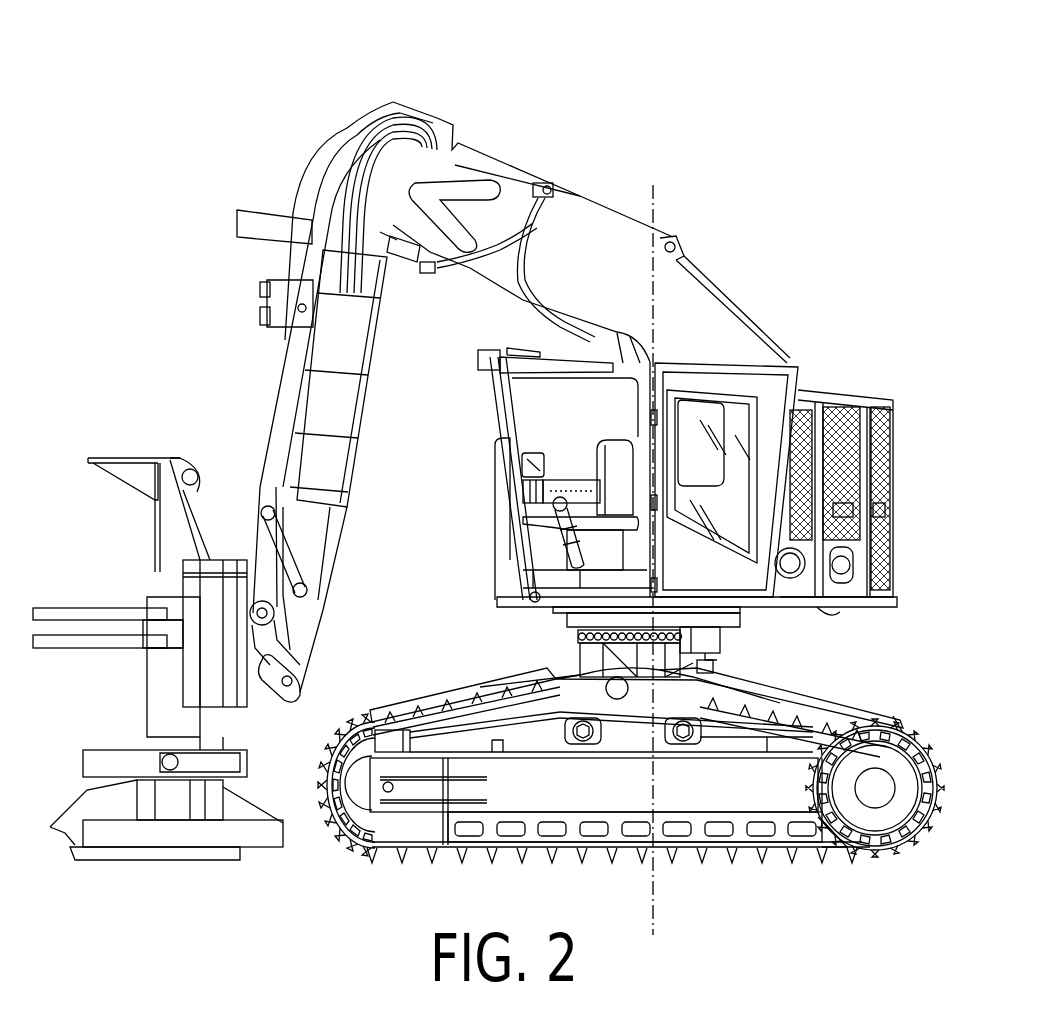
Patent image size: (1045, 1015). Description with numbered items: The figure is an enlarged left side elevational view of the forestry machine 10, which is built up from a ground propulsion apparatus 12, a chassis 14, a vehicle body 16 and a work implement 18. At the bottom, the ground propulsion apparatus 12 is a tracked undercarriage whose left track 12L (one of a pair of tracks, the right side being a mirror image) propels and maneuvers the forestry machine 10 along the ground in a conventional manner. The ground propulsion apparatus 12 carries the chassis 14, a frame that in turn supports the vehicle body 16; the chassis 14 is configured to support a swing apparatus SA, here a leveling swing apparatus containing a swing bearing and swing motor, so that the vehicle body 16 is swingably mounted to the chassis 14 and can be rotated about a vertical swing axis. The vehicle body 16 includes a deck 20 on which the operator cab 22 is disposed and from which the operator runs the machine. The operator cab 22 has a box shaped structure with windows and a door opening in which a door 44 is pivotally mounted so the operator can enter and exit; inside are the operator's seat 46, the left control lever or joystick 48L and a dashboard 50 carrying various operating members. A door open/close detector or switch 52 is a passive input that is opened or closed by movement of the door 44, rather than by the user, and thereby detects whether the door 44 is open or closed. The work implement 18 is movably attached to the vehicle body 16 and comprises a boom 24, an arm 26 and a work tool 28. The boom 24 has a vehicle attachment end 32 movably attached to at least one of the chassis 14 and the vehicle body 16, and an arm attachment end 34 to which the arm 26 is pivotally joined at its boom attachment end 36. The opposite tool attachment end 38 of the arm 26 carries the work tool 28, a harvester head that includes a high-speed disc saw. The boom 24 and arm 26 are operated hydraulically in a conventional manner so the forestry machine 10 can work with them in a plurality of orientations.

The forestry machine 10 is at (775, 190).
The ground propulsion apparatus 12 is at (815, 875).
The left track 12L is at (372, 852).
The chassis 14 is at (850, 702).
The vehicle body 16 is at (862, 378).
The work implement 18 is at (465, 100).
The deck 20 is at (830, 606).
The operator cab 22 is at (500, 348).
The boom 24 is at (595, 240).
The arm 26 is at (330, 410).
The work tool 28 is at (170, 690).
The vehicle attachment end 32 is at (762, 358).
The arm attachment end 34 is at (430, 108).
The boom attachment end 36 is at (330, 215).
The tool attachment end 38 is at (295, 633).
The door 44 is at (795, 375).
The operator's seat 46 is at (627, 437).
The left control lever or joystick 48L is at (560, 527).
The dashboard 50 is at (523, 438).
The door open/close detector or switch 52 is at (530, 608).
The swing apparatus SA is at (728, 660).